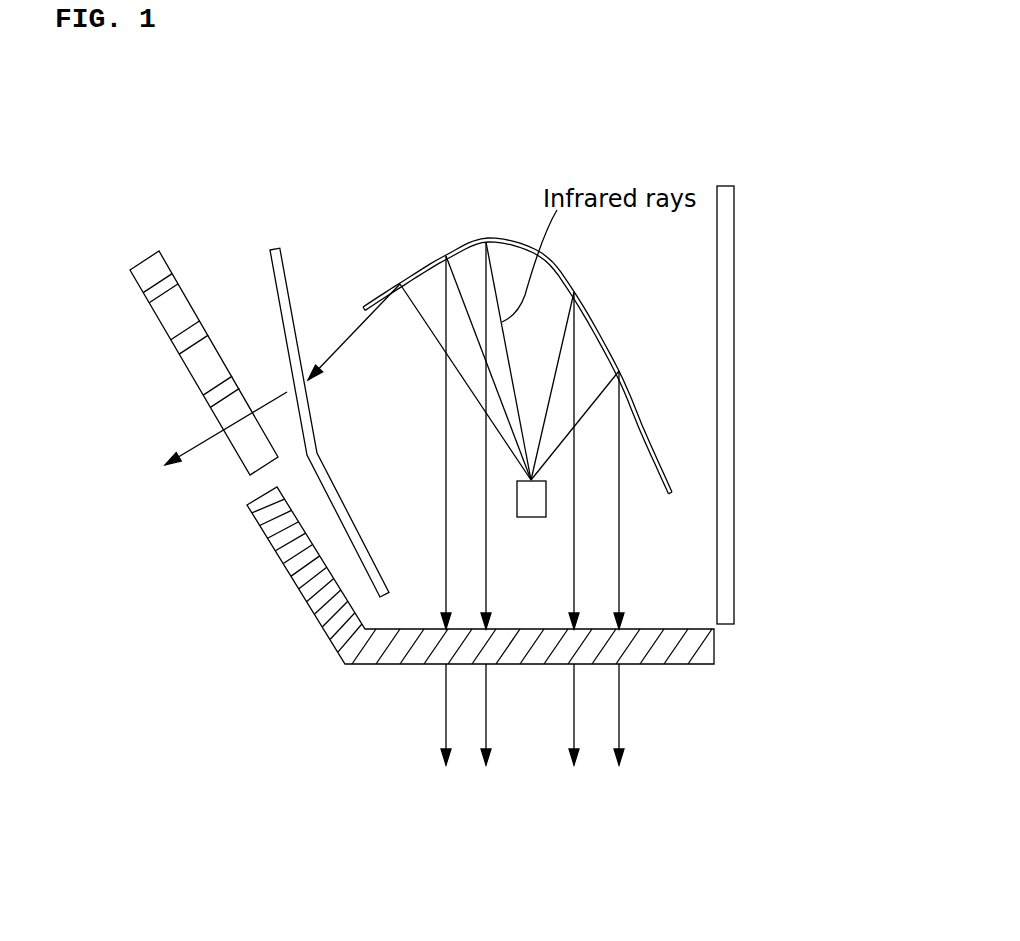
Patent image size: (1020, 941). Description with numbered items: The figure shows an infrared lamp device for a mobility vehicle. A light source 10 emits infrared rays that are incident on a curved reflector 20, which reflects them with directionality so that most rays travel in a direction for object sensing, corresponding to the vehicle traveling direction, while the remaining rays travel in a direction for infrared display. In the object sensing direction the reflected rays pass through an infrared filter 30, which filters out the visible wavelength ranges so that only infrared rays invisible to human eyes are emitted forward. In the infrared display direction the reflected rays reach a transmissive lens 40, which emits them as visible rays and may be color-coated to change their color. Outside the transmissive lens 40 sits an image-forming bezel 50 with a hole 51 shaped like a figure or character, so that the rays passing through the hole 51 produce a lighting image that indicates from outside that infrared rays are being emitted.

The light source 10 is at (537, 500).
The reflector 20 is at (490, 238).
The infrared filter 30 is at (676, 655).
The transmissive lens 40 is at (275, 250).
The image-forming bezel 50 is at (242, 452).
The hole 51 is at (195, 347).